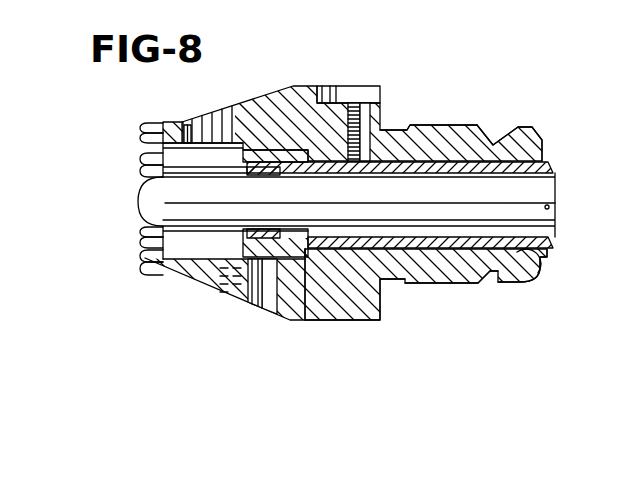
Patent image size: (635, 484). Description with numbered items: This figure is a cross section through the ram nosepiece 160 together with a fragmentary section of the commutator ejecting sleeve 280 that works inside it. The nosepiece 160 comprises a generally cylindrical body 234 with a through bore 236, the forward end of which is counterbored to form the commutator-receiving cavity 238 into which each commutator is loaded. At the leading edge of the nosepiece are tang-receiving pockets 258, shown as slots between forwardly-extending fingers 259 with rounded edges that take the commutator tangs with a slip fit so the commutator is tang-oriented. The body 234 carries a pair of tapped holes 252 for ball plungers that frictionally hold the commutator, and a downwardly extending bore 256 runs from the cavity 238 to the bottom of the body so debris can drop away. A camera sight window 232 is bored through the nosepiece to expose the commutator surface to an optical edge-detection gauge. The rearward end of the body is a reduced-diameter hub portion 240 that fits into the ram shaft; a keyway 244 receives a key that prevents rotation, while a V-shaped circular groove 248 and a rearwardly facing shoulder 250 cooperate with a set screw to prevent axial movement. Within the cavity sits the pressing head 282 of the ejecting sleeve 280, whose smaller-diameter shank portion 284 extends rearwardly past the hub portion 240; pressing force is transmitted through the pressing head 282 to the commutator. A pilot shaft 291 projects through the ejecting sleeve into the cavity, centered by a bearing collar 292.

The ram nosepiece 160 is at (272, 87).
The camera sight window 232 is at (186, 122).
The bearing collar 292 is at (246, 165).
The pressing head 282 is at (278, 151).
The keyway 244 is at (345, 104).
The hub portion 240 is at (437, 125).
The through bore 236 is at (474, 168).
The commutator ejecting sleeve 280 is at (556, 162).
The pilot shaft 291 is at (545, 208).
The shank portion 284 is at (517, 258).
The V-shaped circular groove 248 is at (490, 273).
The rearwardly facing shoulder 250 is at (383, 309).
The cylindrical body 234 is at (336, 321).
The downwardly extending bore 256 is at (260, 299).
The tapped holes 252 is at (213, 287).
The commutator-receiving cavity 238 is at (163, 241).
The forwardly-extending fingers 259 is at (141, 198).
The tang-receiving pockets 258 is at (146, 158).